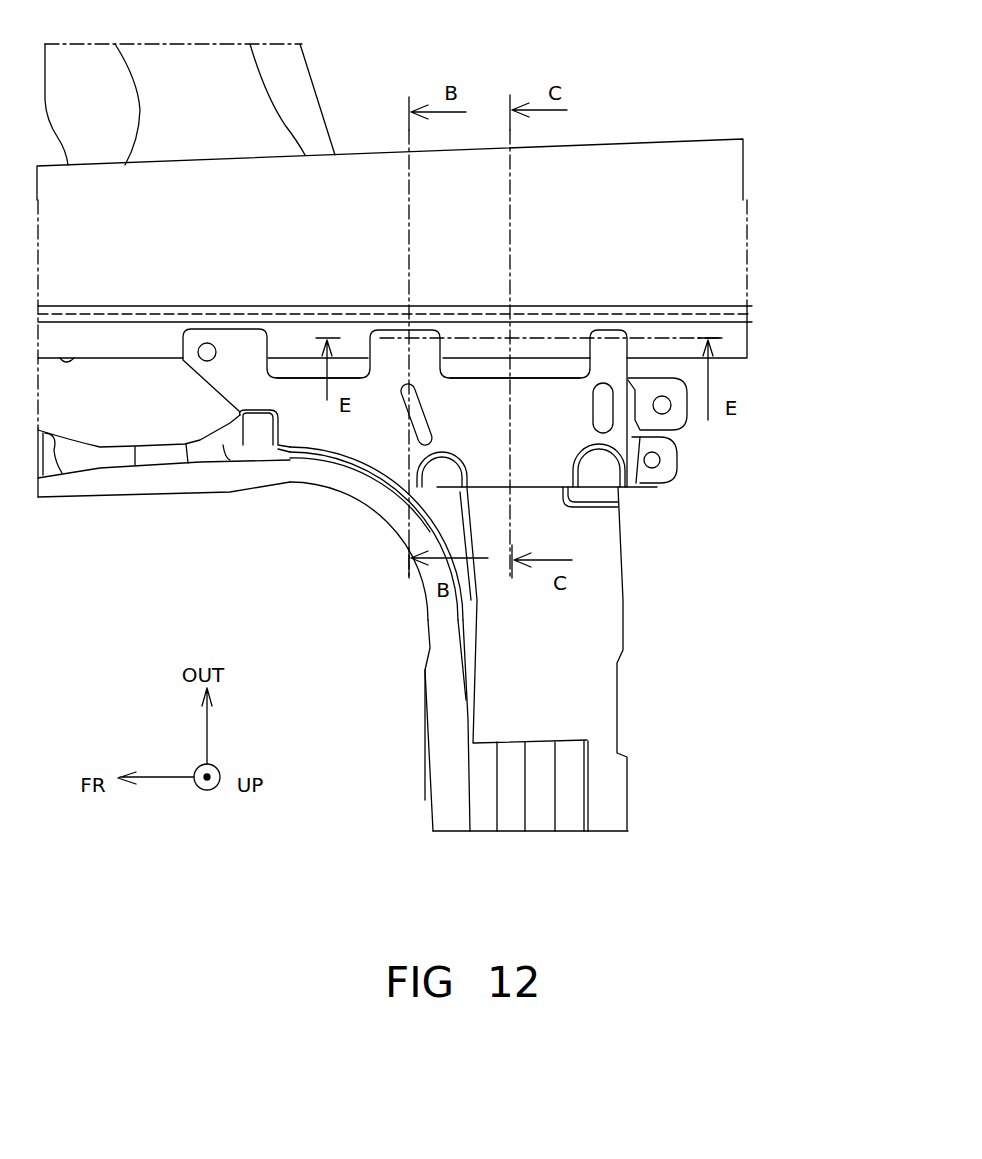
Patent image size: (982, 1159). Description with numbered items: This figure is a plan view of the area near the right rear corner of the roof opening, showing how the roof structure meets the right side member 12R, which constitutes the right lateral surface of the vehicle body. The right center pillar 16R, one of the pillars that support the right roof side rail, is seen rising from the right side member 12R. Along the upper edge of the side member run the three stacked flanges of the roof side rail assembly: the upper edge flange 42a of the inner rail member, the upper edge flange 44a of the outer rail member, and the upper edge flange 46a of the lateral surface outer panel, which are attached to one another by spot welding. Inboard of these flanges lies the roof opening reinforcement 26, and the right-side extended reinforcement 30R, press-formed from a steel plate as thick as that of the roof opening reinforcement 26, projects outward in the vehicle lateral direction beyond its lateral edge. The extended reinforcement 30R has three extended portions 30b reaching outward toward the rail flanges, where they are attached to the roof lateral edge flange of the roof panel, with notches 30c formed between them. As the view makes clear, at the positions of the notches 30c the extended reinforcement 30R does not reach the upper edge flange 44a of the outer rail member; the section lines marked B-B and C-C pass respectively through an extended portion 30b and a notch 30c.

The right center pillar 16R is at (302, 98).
The right side member 12R is at (637, 170).
The upper edge flange of lateral surface outer panel 46a is at (460, 300).
The upper edge flange of outer rail member 44a is at (737, 342).
The upper edge flange of inner rail member 42a is at (460, 359).
The right-side extended reinforcement 30R is at (363, 430).
The extended portion 30b is at (250, 350).
The notch 30c is at (293, 375).
The roof opening reinforcement 26 is at (593, 628).